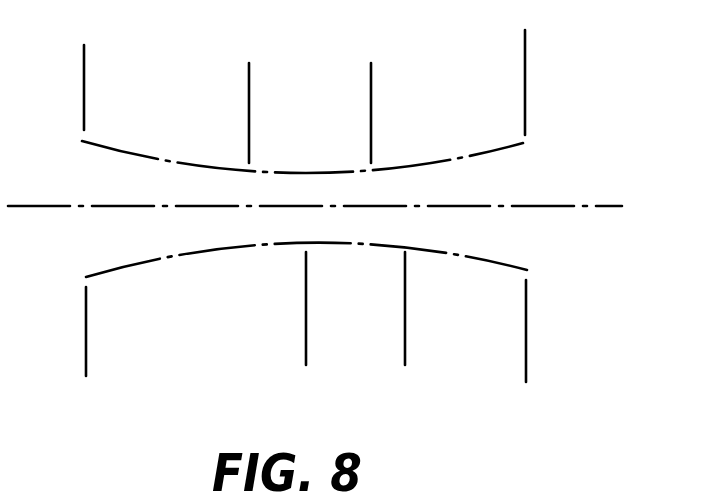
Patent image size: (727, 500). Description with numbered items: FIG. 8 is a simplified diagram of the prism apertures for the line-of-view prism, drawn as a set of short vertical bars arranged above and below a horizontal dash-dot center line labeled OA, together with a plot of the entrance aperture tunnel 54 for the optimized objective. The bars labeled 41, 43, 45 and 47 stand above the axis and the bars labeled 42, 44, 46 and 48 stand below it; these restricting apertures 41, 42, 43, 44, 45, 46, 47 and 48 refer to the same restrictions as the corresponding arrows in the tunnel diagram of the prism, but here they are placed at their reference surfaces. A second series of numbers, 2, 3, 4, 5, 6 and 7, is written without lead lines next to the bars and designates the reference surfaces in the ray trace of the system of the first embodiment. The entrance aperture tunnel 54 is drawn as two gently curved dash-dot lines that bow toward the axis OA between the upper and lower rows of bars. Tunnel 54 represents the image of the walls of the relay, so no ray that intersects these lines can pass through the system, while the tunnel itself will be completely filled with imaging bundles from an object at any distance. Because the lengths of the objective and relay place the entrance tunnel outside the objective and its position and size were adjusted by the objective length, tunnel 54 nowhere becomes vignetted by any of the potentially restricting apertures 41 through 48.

The reference surface 2 is at (84, 75).
The reference surface 3 is at (249, 129).
The reference surface 4 is at (331, 315).
The reference surface 5 is at (371, 122).
The reference surface 6 is at (405, 323).
The reference surface 7 is at (525, 95).
The restricting aperture 41 is at (113, 75).
The restricting aperture 42 is at (86, 323).
The restricting aperture 43 is at (275, 100).
The restricting aperture 44 is at (329, 323).
The restricting aperture 45 is at (398, 100).
The restricting aperture 46 is at (431, 323).
The restricting aperture 47 is at (552, 70).
The restricting aperture 48 is at (526, 346).
The entrance aperture tunnel 54 is at (122, 151).
The optical axis OA is at (332, 205).